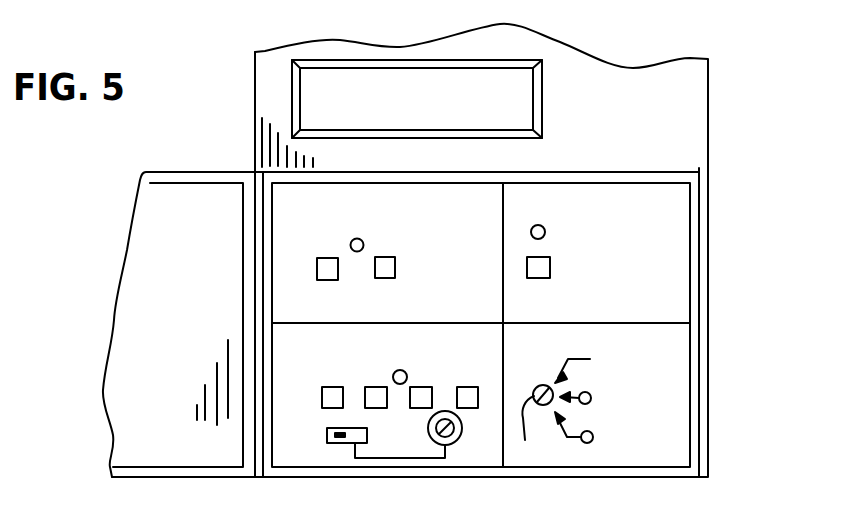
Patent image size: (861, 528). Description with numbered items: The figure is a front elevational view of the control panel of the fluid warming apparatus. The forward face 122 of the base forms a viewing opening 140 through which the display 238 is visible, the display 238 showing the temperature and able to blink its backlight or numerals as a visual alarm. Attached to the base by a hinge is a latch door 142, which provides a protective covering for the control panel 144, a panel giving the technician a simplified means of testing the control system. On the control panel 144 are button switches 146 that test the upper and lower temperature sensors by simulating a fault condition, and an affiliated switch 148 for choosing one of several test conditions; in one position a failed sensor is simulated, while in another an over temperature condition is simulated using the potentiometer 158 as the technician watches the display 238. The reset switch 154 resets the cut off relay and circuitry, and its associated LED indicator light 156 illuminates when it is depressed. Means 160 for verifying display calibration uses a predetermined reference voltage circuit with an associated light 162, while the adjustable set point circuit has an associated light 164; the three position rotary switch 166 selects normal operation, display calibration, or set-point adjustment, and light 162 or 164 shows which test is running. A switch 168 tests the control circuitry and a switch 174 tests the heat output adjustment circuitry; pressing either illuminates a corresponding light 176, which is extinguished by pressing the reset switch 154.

The forward face 122 is at (700, 118).
The viewing opening 140 is at (475, 69).
The latch door 142 is at (153, 443).
The control panel 144 is at (648, 254).
The button switches 146 is at (312, 399).
The switch 148 is at (327, 434).
The reset switch 154 is at (550, 269).
The LED indicator light 156 is at (543, 226).
The potentiometer 158 is at (450, 445).
The means for determining whether the display is properly calibrated 160 is at (563, 360).
The light 162 is at (591, 399).
The light 164 is at (593, 438).
The three position rotary switch 166 is at (535, 431).
The switch 168 is at (327, 257).
The switch 174 is at (395, 267).
The light 176 is at (358, 238).
The display panel 238 is at (513, 82).